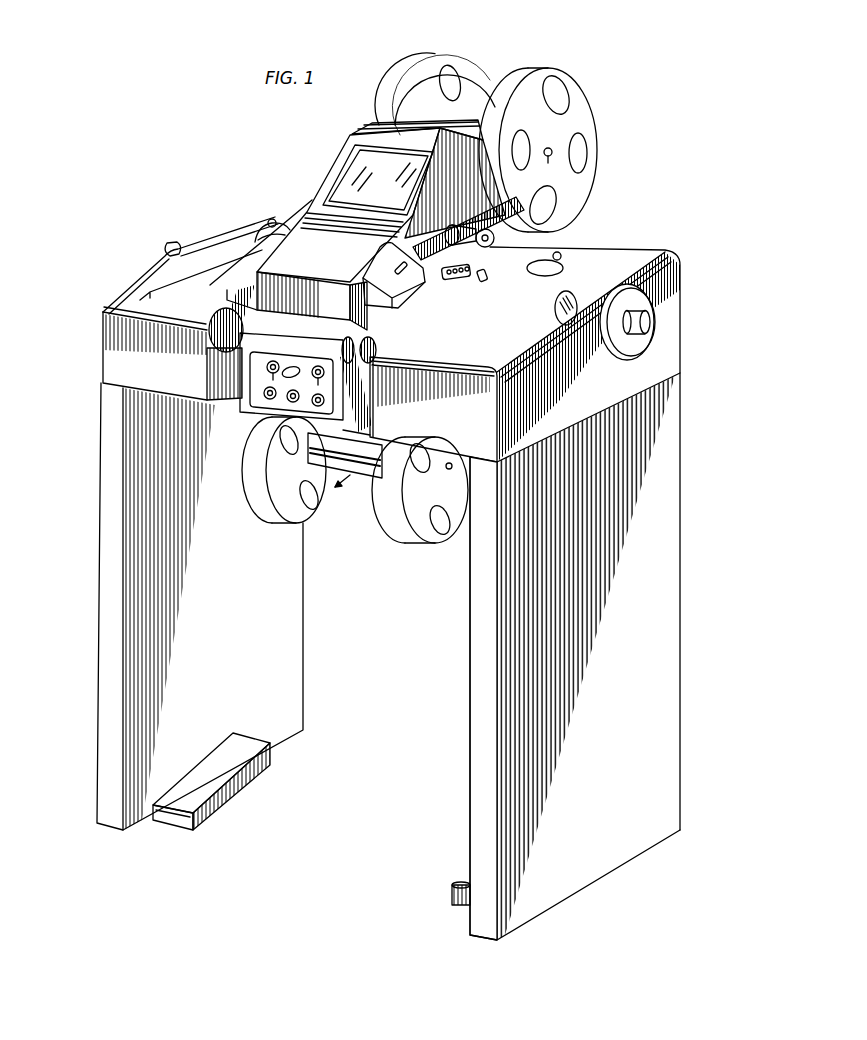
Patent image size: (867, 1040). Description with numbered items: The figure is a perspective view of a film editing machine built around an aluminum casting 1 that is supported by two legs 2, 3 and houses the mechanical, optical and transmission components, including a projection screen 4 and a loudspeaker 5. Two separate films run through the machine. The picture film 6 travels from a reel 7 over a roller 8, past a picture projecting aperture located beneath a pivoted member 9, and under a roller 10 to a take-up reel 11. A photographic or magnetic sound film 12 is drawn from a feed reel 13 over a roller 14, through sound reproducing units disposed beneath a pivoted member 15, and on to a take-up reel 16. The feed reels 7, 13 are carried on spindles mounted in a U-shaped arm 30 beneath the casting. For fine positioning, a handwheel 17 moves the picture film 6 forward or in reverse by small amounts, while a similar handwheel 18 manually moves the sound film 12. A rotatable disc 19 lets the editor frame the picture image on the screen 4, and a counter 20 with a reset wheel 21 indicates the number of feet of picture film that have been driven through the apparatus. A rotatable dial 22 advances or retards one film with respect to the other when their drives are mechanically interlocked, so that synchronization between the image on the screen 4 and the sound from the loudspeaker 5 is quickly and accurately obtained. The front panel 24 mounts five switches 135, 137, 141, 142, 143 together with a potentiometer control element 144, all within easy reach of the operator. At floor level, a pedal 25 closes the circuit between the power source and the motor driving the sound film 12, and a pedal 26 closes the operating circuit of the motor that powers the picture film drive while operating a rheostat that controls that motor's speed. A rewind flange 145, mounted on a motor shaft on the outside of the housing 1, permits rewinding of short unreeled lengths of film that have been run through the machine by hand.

The aluminum casting 1 is at (638, 260).
The leg 2 is at (99, 742).
The leg 3 is at (470, 650).
The projection screen 4 is at (355, 165).
The loudspeaker 5 is at (430, 136).
The picture film 6 is at (456, 250).
The reel 7 is at (421, 528).
The roller 8 is at (394, 293).
The pivoted member 9 is at (408, 292).
The roller 10 is at (491, 244).
The take-up reel 11 is at (580, 103).
The sound film 12 is at (236, 305).
The feed reel 13 is at (291, 498).
The roller 14 is at (210, 352).
The pivoted member 15 is at (236, 258).
The take-up reel 16 is at (418, 62).
The handwheel 17 is at (570, 325).
The handwheel 18 is at (174, 243).
The rotatable disc 19 is at (560, 257).
The counter 20 is at (455, 281).
The reset wheel 21 is at (483, 283).
The rotatable dial 22 is at (262, 228).
The front panel 24 is at (260, 380).
The pedal 25 is at (258, 762).
The pedal 26 is at (457, 890).
The U-shaped arm 30 is at (372, 481).
The switch 135 is at (322, 378).
The switch 137 is at (322, 402).
The switch 141 is at (266, 399).
The switch 142 is at (274, 360).
The switch 143 is at (297, 402).
The potentiometer control element 144 is at (298, 368).
The rewind flange 145 is at (650, 323).